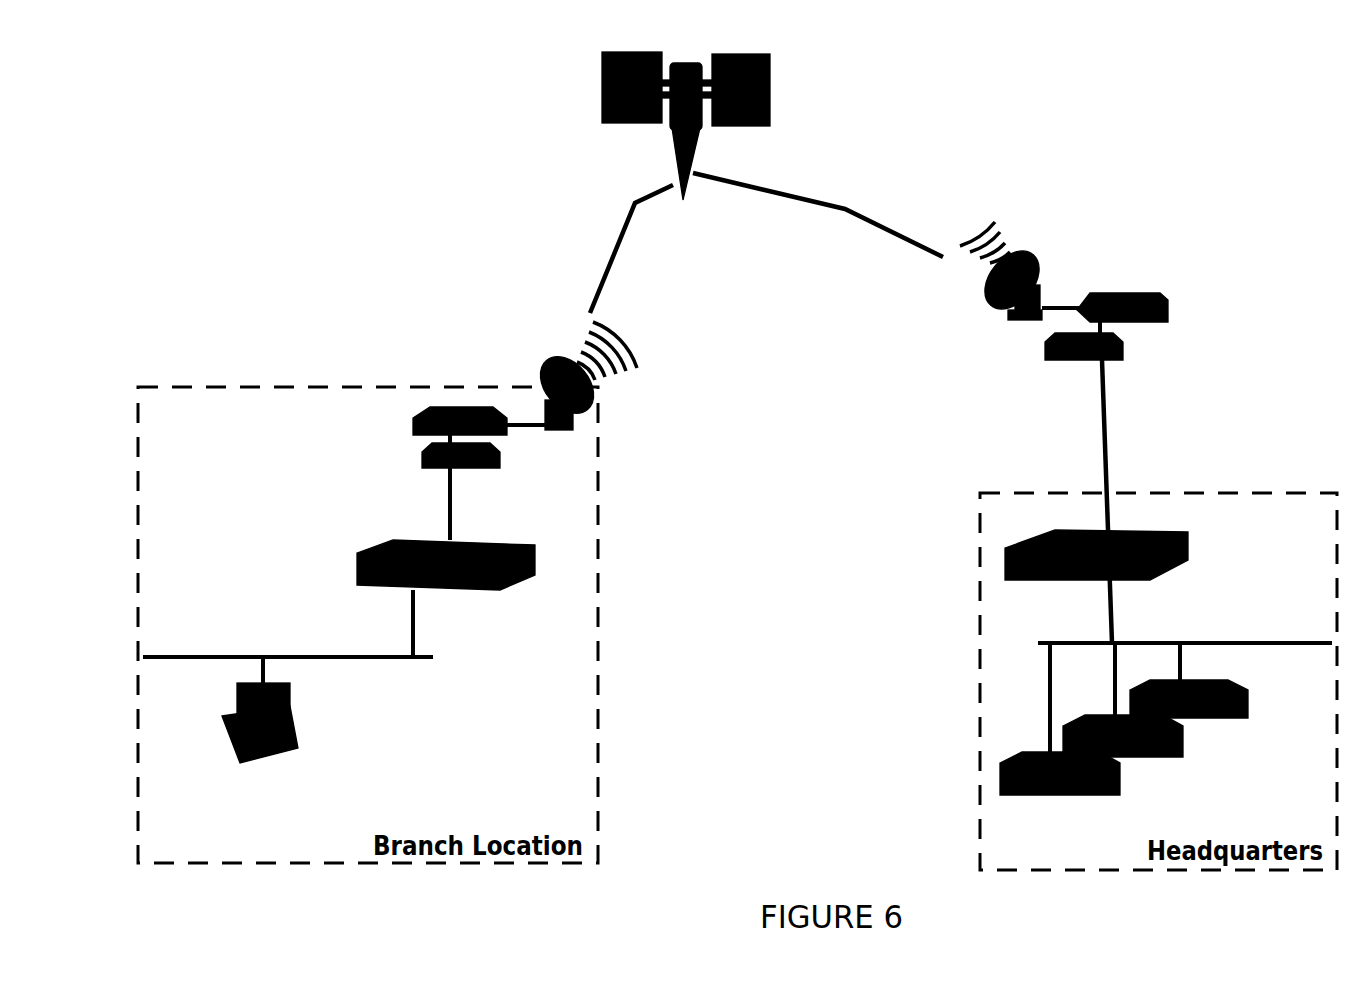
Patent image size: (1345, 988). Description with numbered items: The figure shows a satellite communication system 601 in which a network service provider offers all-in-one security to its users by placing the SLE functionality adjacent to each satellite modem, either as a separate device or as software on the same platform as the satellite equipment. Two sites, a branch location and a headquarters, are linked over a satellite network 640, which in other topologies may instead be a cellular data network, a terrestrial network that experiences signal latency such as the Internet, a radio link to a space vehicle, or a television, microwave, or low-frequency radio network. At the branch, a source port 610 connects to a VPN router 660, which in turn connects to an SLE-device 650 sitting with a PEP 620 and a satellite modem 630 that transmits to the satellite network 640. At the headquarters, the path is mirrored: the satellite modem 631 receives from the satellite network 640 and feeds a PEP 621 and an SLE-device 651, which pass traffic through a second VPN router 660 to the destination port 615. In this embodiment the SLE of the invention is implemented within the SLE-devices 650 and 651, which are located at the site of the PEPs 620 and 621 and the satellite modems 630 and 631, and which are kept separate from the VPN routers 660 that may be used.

The satellite communication system 601 is at (318, 117).
The source port 610 is at (308, 750).
The destination port 615 is at (1188, 737).
The PEP 620 is at (460, 404).
The PEP 621 is at (1132, 288).
The satellite modem 630 is at (574, 355).
The satellite modem 631 is at (1048, 262).
The satellite network 640 is at (650, 132).
The SLE-device 650 is at (478, 470).
The SLE-device 651 is at (1130, 345).
The VPN router 660 is at (516, 592).